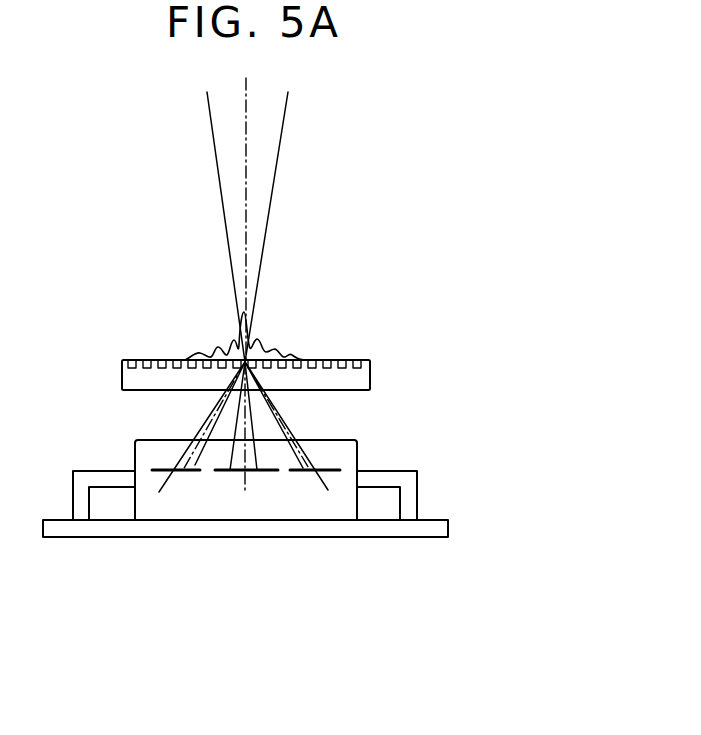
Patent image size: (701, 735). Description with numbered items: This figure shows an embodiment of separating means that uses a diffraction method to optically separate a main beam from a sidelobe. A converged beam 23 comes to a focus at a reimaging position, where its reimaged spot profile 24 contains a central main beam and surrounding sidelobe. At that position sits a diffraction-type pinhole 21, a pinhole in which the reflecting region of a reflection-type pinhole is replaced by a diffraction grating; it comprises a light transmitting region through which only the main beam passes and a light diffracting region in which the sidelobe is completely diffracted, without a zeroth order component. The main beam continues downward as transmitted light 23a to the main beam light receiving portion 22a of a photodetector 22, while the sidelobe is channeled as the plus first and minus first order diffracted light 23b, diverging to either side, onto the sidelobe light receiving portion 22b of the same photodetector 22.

The diffraction-type pinhole 21 is at (362, 377).
The photodetector 22 is at (325, 510).
The main beam light receiving portion 22a is at (233, 473).
The sidelobe light receiving portion 22b is at (175, 477).
The converged beam 23 is at (265, 177).
The transmitted light 23a is at (240, 422).
The +1st and −1st order diffracted light 23b is at (175, 453).
The reimaged spot profile 24 is at (282, 332).